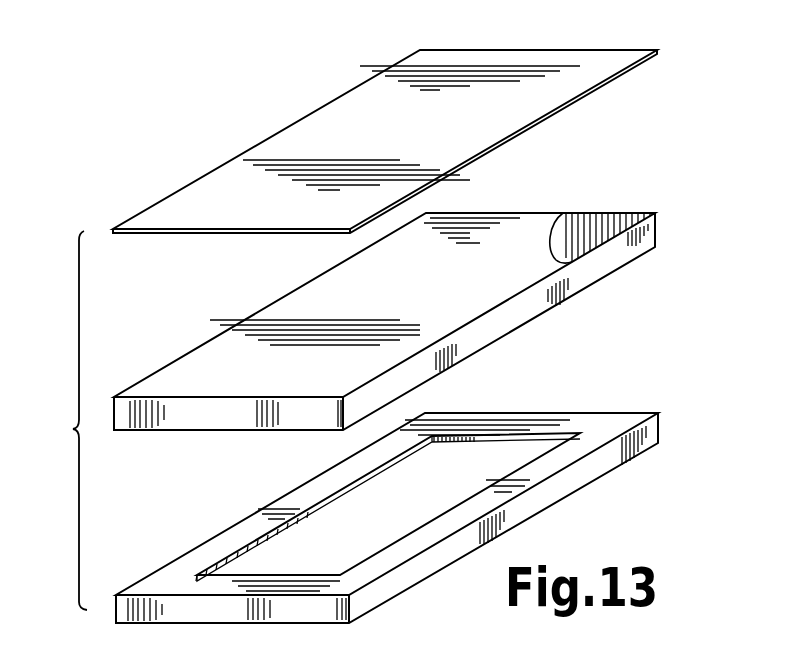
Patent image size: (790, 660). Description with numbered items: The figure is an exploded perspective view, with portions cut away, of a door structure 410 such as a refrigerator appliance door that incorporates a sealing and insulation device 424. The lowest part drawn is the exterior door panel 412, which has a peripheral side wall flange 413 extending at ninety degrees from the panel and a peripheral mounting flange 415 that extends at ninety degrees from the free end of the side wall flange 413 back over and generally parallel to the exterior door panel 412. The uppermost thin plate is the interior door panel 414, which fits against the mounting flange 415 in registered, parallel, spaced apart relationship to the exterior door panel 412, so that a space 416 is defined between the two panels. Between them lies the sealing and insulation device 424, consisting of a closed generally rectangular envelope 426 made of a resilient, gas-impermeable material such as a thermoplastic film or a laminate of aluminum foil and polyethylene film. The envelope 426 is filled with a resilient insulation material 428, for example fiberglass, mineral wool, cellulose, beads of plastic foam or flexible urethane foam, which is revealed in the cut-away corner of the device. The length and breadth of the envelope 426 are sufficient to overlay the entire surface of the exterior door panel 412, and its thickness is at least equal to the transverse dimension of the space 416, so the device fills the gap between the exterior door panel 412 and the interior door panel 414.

The door structure 410 is at (60, 420).
The exterior door panel 412 is at (598, 484).
The peripheral side wall flange 413 is at (652, 434).
The interior door panel 414 is at (574, 44).
The peripheral mounting flange 415 is at (560, 412).
The space 416 is at (389, 527).
The sealing and insulation device 424 is at (630, 199).
The closed generally rectangular envelope 426 is at (535, 226).
The resilient insulation material 428 is at (641, 213).